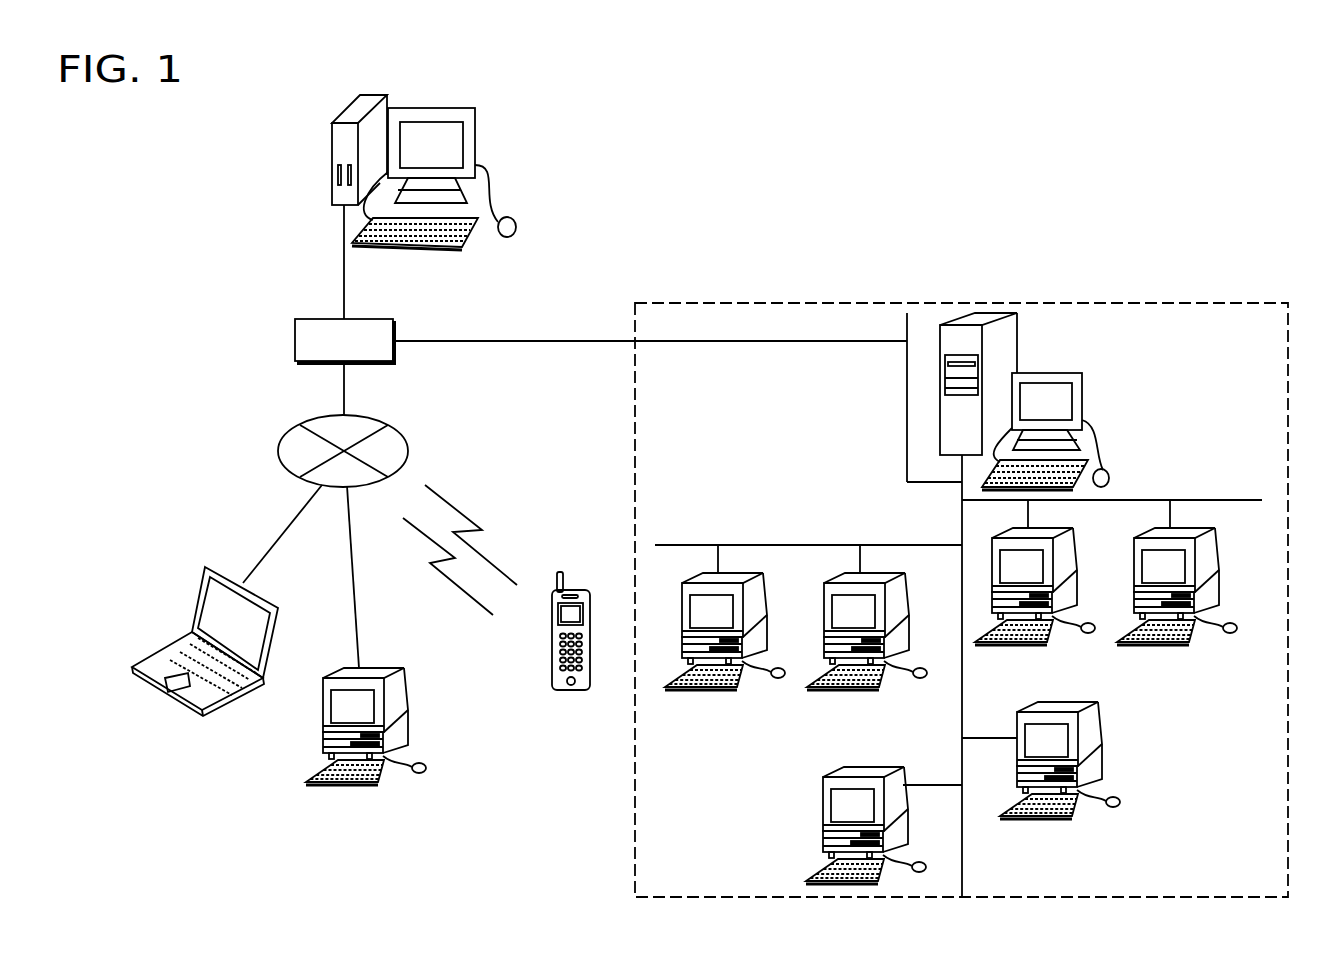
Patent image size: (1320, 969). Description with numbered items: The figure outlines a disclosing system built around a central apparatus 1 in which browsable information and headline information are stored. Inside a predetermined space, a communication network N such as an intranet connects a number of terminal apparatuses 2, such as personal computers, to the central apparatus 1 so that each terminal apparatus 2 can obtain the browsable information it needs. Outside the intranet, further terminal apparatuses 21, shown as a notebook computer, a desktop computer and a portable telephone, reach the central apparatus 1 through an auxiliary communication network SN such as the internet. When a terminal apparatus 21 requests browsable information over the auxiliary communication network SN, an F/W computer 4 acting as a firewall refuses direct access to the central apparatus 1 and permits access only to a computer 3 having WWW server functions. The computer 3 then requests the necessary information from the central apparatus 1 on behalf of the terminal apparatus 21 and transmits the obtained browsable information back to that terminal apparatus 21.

The central apparatus 1 is at (1017, 343).
The terminal apparatus 2 is at (692, 692).
The computer 3 is at (332, 155).
The F/W computer 4 is at (363, 319).
The terminal apparatus 21 is at (168, 693).
The communication network N is at (1066, 303).
The auxiliary communication network SN is at (410, 452).